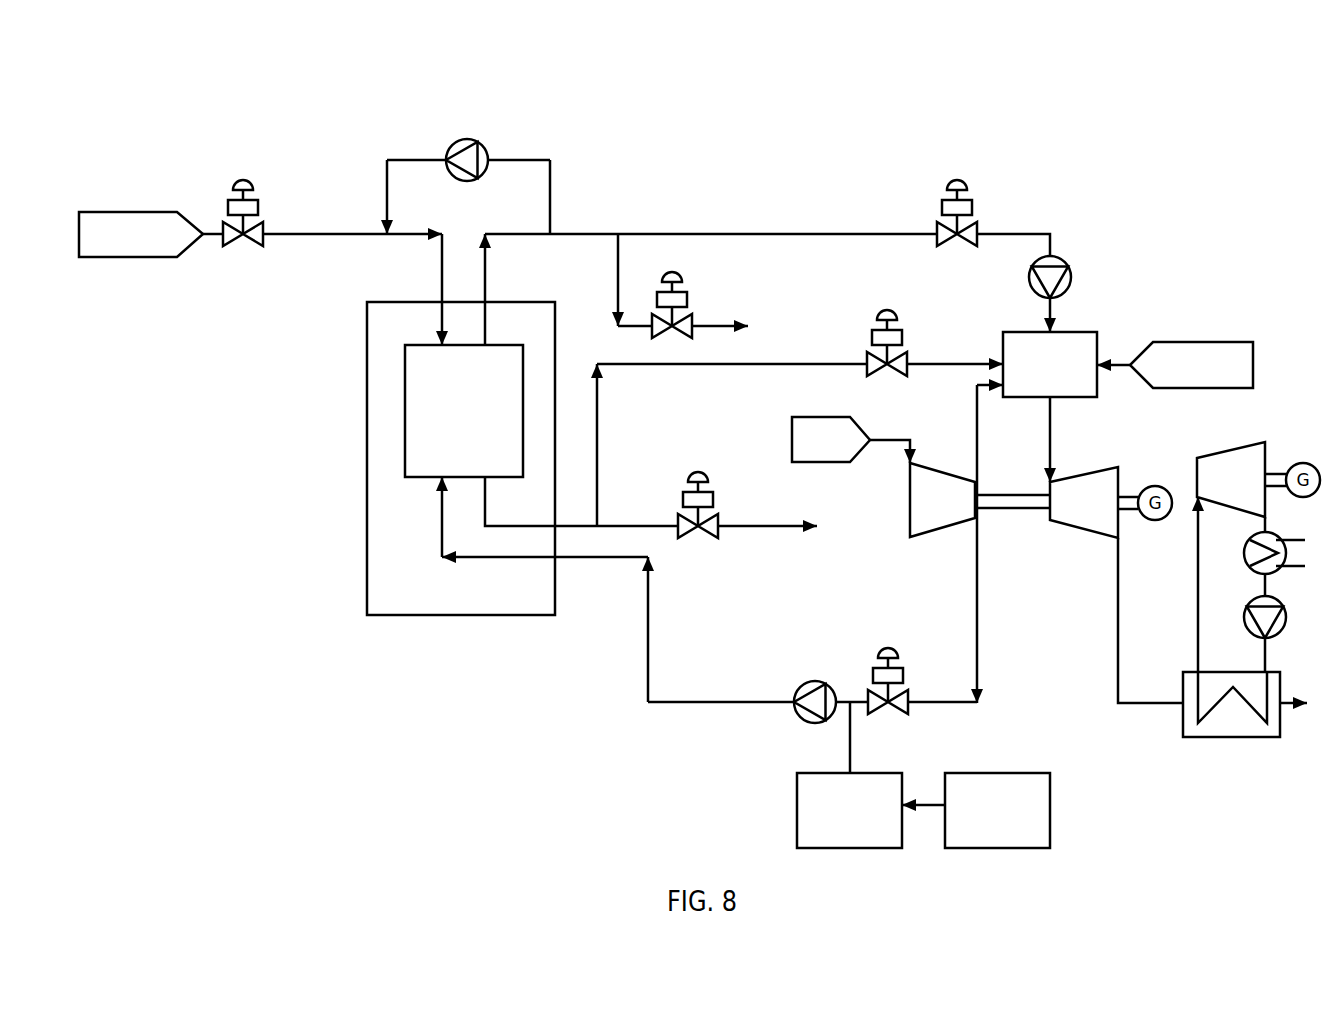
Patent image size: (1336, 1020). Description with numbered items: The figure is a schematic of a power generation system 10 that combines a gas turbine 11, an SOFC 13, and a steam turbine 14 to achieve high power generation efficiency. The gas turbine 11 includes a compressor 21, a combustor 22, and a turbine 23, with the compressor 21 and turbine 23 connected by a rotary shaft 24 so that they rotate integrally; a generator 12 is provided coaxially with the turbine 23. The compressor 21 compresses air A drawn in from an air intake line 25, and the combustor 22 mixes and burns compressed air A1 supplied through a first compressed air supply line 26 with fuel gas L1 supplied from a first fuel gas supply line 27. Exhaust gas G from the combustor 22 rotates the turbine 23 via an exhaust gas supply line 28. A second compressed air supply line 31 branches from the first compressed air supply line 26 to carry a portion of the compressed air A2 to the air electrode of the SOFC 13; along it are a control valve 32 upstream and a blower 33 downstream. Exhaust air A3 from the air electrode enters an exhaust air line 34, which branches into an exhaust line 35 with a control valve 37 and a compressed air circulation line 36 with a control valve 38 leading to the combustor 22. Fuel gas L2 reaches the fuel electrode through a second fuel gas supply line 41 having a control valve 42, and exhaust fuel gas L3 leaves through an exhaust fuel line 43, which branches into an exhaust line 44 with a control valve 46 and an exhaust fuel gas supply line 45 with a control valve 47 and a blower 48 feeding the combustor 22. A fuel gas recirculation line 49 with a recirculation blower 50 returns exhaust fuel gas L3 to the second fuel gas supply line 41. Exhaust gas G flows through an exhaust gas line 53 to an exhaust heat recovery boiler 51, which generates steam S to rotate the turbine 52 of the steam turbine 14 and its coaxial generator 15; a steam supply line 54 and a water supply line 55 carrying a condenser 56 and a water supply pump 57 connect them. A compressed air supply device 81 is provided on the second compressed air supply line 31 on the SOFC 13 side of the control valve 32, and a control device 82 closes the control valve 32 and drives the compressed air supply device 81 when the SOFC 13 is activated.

The power generation system 10 is at (705, 96).
The gas turbine 11 is at (1125, 454).
The generator 12 is at (1154, 521).
The SOFC 13 is at (494, 343).
The steam turbine 14 is at (1274, 430).
The generator 15 is at (1306, 460).
The compressor 21 is at (917, 538).
The combustor 22 is at (1073, 331).
The turbine 23 is at (1060, 538).
The rotary shaft 24 is at (1011, 514).
The air intake line 25 is at (890, 437).
The first compressed air supply line 26 is at (975, 415).
The first fuel gas supply line 27 is at (1119, 362).
The exhaust gas supply line 28 is at (1048, 415).
The second compressed air supply line 31 is at (750, 704).
The control valve 32 is at (891, 648).
The blower 33 is at (810, 683).
The exhaust air line 34 is at (528, 515).
The exhaust line 35 is at (627, 524).
The compressed air circulation line 36 is at (784, 367).
The control valve 37 is at (695, 473).
The control valve 38 is at (888, 307).
The second fuel gas supply line 41 is at (333, 233).
The control valve 42 is at (247, 180).
The exhaust fuel line 43 is at (530, 240).
The exhaust line 44 is at (727, 325).
The exhaust fuel gas supply line 45 is at (787, 232).
The control valve 46 is at (677, 279).
The control valve 47 is at (960, 176).
The blower 48 is at (1062, 251).
The fuel gas recirculation line 49 is at (537, 161).
The recirculation blower 50 is at (472, 140).
The exhaust heat recovery boiler 51 is at (1231, 740).
The turbine 52 is at (1198, 469).
The exhaust gas line 53 is at (1142, 707).
The steam supply line 54 is at (1198, 639).
The water supply line 55 is at (1268, 661).
The condenser 56 is at (1283, 533).
The water supply pump 57 is at (1283, 598).
The compressed air supply device 81 is at (870, 773).
The control device 82 is at (1012, 773).
The fuel gas L1 is at (1188, 342).
The fuel gas L2 is at (133, 212).
The exhaust fuel gas L3 is at (532, 220).
The air A is at (811, 416).
The compressed air A1 is at (990, 417).
The compressed air A2 is at (515, 567).
The exhaust air A3 is at (797, 336).
The exhaust gas G is at (1063, 417).
The steam S is at (1185, 575).